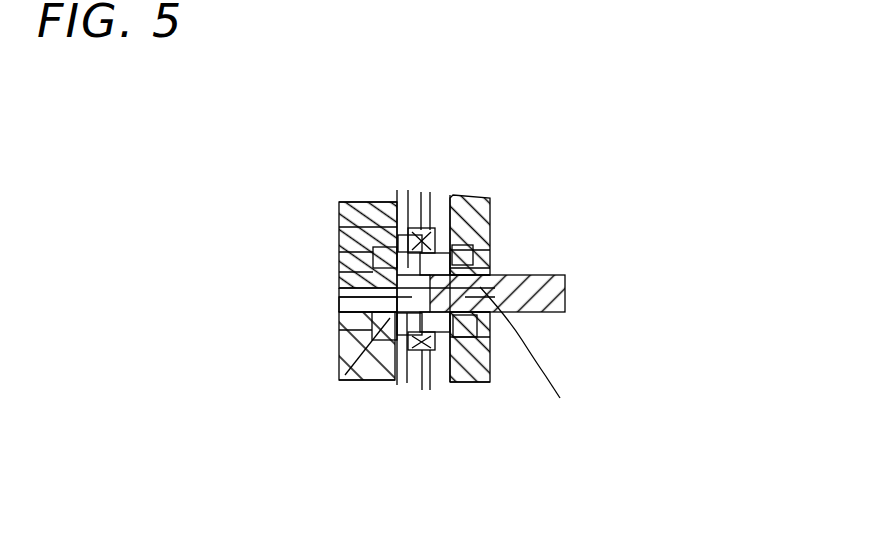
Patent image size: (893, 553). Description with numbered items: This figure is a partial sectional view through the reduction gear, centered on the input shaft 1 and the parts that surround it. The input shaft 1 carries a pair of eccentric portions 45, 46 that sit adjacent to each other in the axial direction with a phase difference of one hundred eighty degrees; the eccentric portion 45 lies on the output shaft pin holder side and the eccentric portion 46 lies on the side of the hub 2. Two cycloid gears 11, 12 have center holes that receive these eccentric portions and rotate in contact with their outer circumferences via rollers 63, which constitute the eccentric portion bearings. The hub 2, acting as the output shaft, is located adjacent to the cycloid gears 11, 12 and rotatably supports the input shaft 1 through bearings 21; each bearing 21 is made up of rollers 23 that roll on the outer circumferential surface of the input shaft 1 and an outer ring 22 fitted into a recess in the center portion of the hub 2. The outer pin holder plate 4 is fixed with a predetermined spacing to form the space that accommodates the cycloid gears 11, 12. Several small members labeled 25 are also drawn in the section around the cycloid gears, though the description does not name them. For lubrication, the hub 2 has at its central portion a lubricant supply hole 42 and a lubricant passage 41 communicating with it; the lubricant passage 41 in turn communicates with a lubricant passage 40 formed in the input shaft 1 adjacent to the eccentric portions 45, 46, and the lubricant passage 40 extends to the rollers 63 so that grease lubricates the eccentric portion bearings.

The input shaft 1 is at (565, 274).
The hub 2 is at (339, 241).
The outer pin holder plate 4 is at (482, 218).
The cycloid gear 11 is at (446, 203).
The cycloid gear 12 is at (408, 200).
The bearing 21 is at (339, 272).
The outer ring 22 is at (339, 252).
The roller 23 is at (339, 328).
The washer 25 is at (392, 205).
The lubricant passage 40 is at (525, 314).
The lubricant passage 41 is at (339, 306).
The lubricant supply hole 42 is at (339, 292).
The eccentric portion 45 is at (490, 400).
The eccentric portion 46 is at (340, 228).
The roller 63 is at (345, 222).